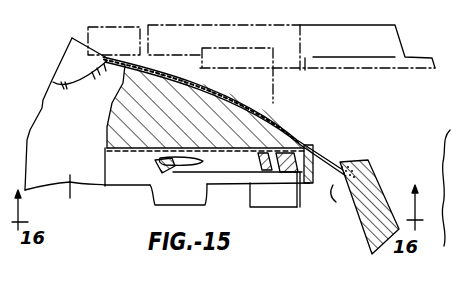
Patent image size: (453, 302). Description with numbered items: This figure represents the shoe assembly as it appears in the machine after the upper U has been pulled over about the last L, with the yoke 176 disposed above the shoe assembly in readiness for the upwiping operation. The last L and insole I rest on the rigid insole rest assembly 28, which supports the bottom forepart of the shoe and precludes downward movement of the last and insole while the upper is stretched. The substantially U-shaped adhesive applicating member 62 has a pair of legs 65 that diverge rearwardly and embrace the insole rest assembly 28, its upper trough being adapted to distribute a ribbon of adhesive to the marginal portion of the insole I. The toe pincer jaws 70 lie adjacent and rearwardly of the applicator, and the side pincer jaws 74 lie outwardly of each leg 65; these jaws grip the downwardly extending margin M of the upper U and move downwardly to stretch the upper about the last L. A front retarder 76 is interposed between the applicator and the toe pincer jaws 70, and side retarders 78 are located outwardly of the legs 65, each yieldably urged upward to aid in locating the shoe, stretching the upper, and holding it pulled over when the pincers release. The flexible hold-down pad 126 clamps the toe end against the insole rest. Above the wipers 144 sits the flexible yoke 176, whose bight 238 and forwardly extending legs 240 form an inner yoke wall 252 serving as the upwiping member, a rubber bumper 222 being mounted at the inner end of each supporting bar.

The rubber bumper 222 is at (107, 37).
The yoke 176 is at (173, 38).
The legs 240 is at (198, 31).
The inner yoke wall 252 is at (243, 35).
The bight 238 is at (305, 25).
The wipers 144 is at (350, 68).
The hold-down pad 126 is at (258, 85).
The insole rest assembly 28 is at (203, 163).
The adhesive applicating member 62 is at (158, 168).
The jaws 74 is at (173, 198).
The legs 65 is at (240, 180).
The side retarders 78 is at (265, 202).
The front retarder 76 is at (324, 196).
The jaws 70 is at (367, 162).
The last L is at (112, 116).
The insole I is at (130, 153).
The upper U is at (70, 198).
The margin M is at (332, 224).